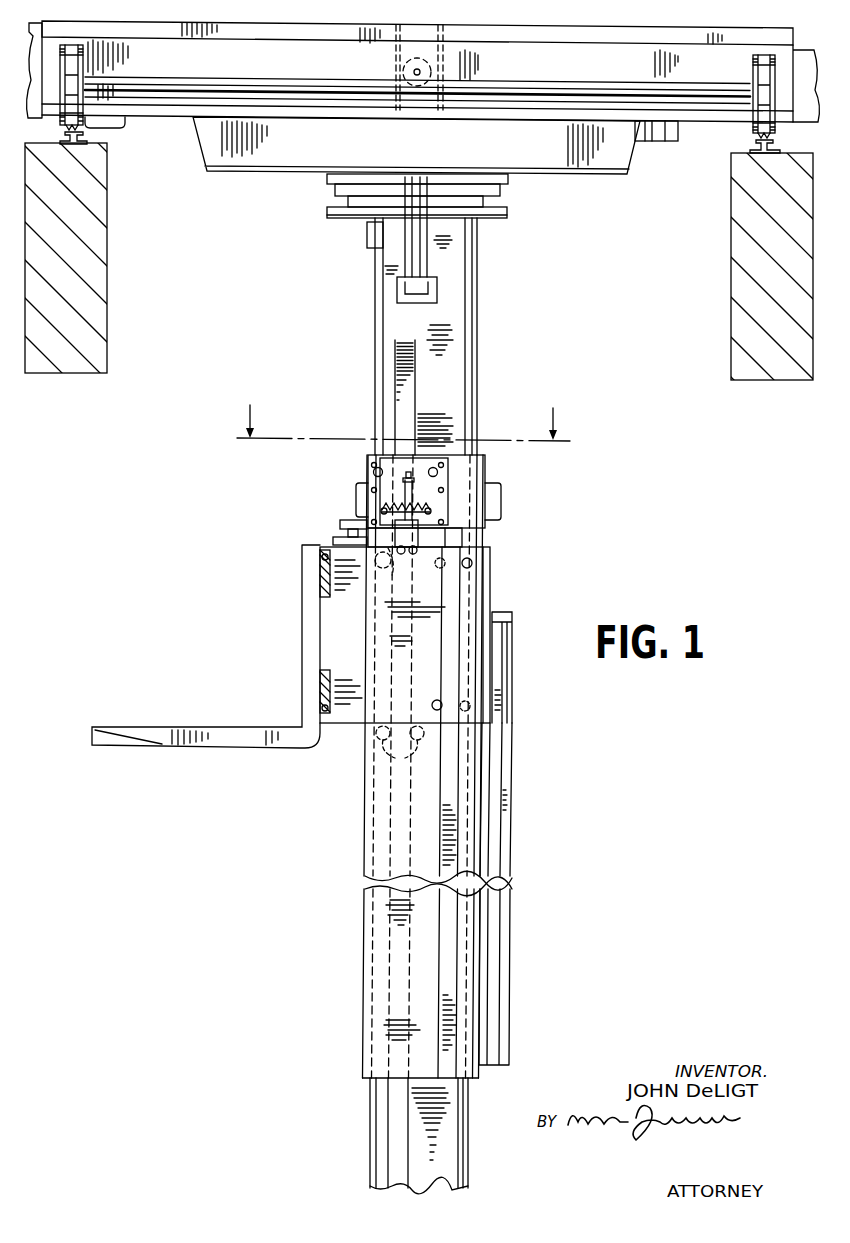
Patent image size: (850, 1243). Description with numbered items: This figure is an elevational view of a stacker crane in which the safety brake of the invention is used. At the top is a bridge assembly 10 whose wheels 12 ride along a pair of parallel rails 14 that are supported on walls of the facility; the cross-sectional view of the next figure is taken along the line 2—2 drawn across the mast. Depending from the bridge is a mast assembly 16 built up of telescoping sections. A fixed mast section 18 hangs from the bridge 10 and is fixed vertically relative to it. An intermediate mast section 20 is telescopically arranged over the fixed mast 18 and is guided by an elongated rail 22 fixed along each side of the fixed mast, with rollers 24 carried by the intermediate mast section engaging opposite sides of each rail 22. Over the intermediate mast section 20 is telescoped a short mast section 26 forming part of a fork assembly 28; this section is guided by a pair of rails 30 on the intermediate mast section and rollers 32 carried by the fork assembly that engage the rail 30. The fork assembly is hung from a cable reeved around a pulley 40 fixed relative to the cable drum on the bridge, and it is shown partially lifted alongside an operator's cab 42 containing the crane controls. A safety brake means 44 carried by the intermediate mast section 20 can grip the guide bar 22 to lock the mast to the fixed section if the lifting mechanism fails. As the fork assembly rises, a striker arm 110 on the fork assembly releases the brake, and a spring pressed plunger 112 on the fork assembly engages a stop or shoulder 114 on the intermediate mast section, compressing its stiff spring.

The bridge assembly 10 is at (160, 121).
The wheels 12 is at (72, 72).
The rails 14 is at (83, 132).
The mast assembly 16 is at (493, 388).
The fixed mast section 18 is at (457, 295).
The intermediate mast section 20 is at (480, 468).
The elongated rail 22 is at (405, 408).
The rollers 24 is at (378, 573).
The short mast section 26 is at (488, 571).
The fork assembly 28 is at (294, 589).
The rails 30 is at (460, 541).
The rollers 32 is at (472, 568).
The pulley 40 is at (403, 62).
The operator's cab 42 is at (487, 843).
The safety brake means 44 is at (386, 494).
The striker arm 110 is at (407, 562).
The spring pressed plunger 112 is at (340, 536).
The stop or shoulder 114 is at (352, 521).
The section line 2— 2 is at (403, 408).